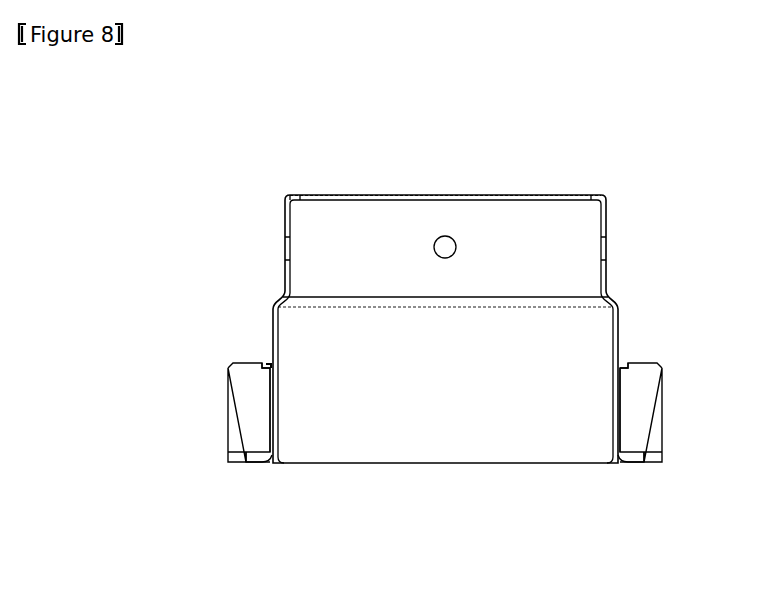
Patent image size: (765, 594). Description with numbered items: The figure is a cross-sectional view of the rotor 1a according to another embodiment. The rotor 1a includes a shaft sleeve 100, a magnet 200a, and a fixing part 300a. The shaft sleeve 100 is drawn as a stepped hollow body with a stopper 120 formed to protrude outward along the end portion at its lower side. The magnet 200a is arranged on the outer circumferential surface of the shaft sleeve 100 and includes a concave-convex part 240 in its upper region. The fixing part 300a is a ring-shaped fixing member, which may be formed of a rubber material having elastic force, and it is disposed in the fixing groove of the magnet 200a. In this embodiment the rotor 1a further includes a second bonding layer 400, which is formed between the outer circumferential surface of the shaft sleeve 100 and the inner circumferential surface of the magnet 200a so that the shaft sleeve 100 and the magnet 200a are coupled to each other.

The rotor 1a is at (166, 141).
The shaft sleeve 100 is at (610, 277).
The stopper 120 is at (259, 465).
The magnet 200a is at (228, 405).
The concave-convex part 240 is at (256, 361).
The fixing part 300a is at (267, 364).
The second bonding layer 400 is at (279, 439).